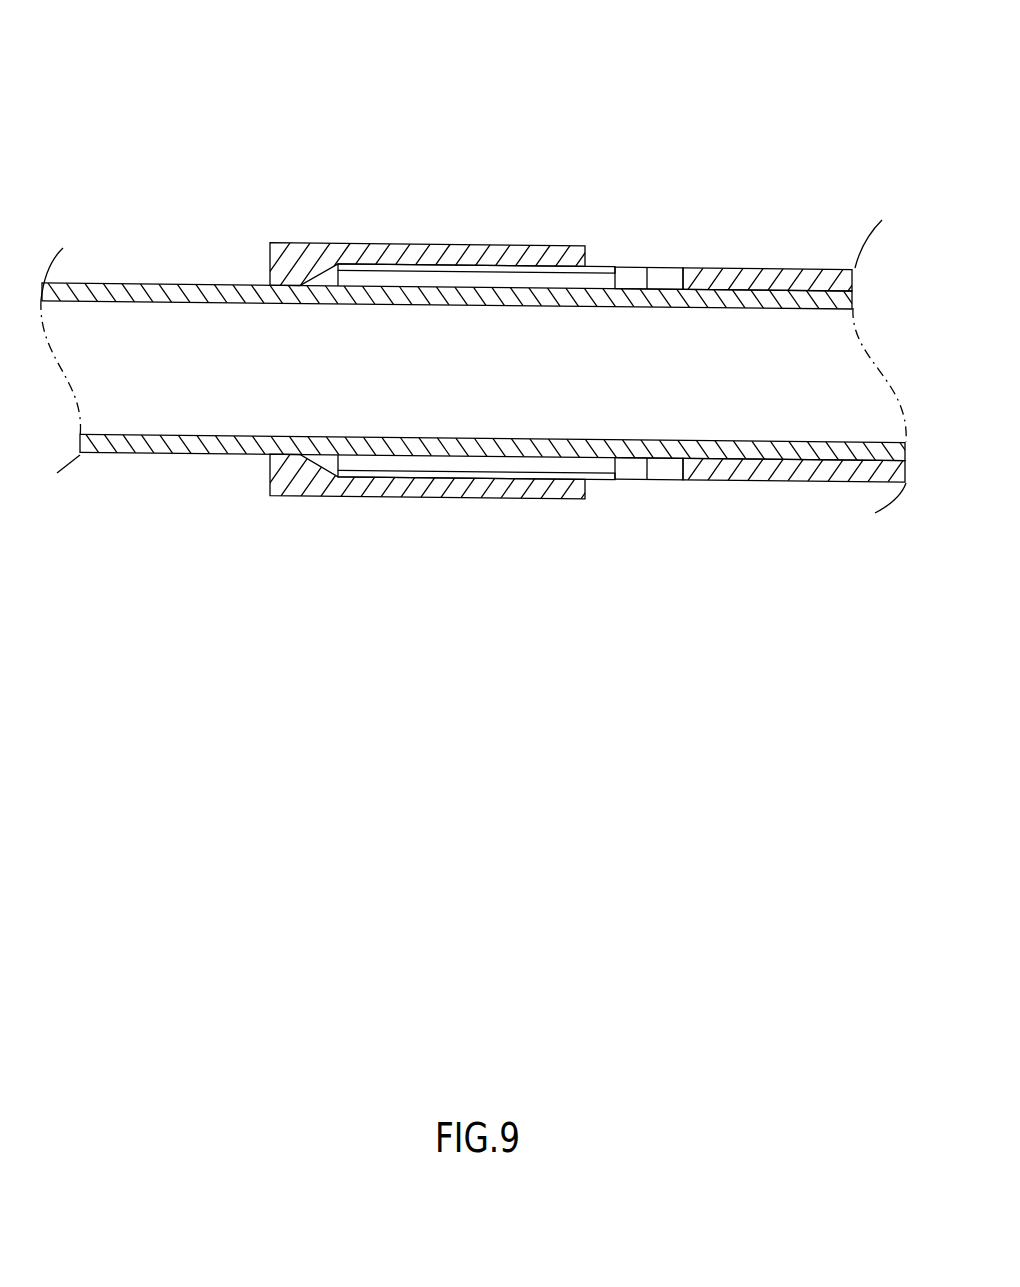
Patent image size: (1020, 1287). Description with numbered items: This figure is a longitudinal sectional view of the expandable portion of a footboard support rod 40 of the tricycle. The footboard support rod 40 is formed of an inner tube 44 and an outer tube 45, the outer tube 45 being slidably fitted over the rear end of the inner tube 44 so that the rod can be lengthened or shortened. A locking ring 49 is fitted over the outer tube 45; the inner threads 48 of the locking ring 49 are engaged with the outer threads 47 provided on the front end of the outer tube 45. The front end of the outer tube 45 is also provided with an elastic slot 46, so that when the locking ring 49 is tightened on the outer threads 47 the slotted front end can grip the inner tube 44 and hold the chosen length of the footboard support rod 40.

The footboard support rod 40 is at (388, 96).
The inner tube 44 is at (168, 282).
The outer tube 45 is at (787, 268).
The elastic slot 46 is at (627, 270).
The outer threads 47 is at (418, 470).
The inner threads 48 is at (458, 482).
The locking ring 49 is at (458, 245).